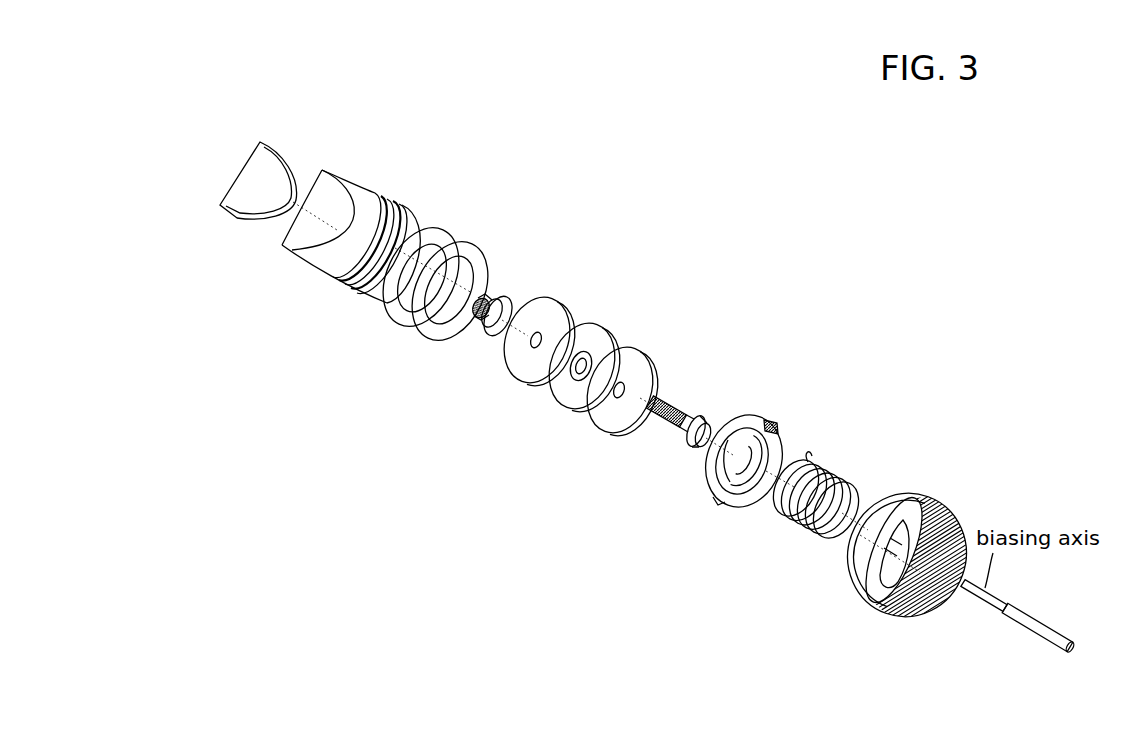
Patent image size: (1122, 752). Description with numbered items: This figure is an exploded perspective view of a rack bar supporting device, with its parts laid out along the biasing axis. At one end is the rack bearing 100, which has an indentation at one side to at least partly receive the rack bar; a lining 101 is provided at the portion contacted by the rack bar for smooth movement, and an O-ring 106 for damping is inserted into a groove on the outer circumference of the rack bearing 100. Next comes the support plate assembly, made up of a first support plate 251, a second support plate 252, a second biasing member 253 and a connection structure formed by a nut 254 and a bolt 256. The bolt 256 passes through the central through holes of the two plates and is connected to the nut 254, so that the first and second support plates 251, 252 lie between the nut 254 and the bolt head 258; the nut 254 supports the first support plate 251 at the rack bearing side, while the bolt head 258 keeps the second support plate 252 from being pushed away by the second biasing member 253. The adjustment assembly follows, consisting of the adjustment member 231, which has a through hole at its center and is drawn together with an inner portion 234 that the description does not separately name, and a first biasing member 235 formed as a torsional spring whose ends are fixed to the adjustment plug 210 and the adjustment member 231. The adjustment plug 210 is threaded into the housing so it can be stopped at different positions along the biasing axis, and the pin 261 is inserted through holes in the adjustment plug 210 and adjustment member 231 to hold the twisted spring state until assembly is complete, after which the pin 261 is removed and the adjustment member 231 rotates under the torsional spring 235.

The rack bearing 100 is at (358, 180).
The lining 101 is at (270, 146).
The O-ring 106 is at (466, 258).
The first support plate 251 is at (557, 300).
The second support plate 252 is at (652, 344).
The second biasing member 253 is at (557, 402).
The nut 254 is at (478, 340).
The bolt 256 is at (667, 437).
The bolt head 258 is at (718, 418).
The adjustment member 231 is at (716, 503).
The inner ring 234 is at (758, 500).
The first biasing member 235 is at (838, 468).
The adjustment plug 210 is at (940, 503).
The pin 261 is at (1028, 638).